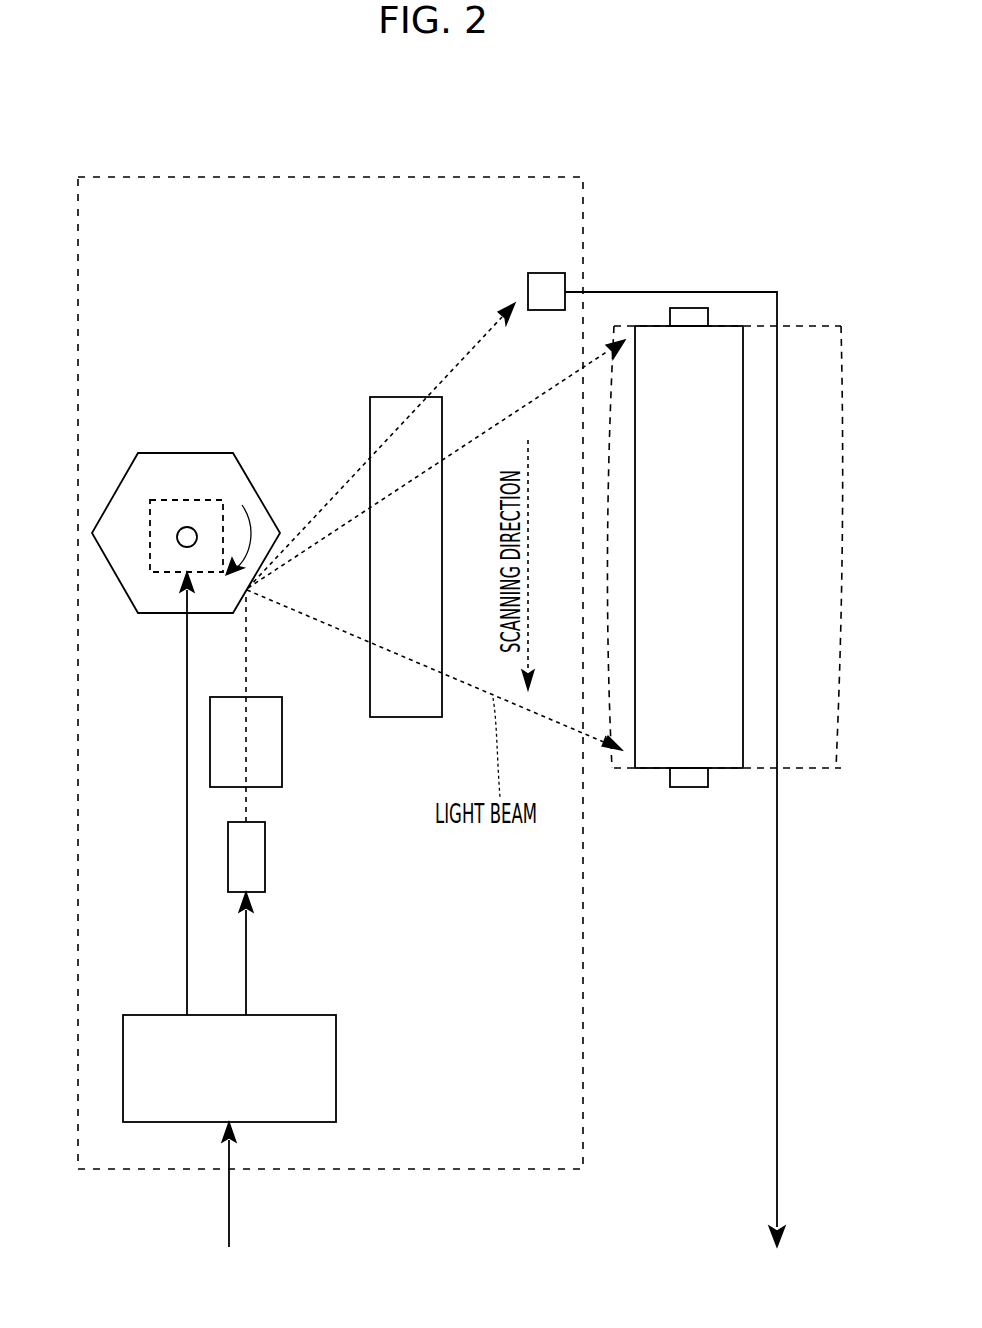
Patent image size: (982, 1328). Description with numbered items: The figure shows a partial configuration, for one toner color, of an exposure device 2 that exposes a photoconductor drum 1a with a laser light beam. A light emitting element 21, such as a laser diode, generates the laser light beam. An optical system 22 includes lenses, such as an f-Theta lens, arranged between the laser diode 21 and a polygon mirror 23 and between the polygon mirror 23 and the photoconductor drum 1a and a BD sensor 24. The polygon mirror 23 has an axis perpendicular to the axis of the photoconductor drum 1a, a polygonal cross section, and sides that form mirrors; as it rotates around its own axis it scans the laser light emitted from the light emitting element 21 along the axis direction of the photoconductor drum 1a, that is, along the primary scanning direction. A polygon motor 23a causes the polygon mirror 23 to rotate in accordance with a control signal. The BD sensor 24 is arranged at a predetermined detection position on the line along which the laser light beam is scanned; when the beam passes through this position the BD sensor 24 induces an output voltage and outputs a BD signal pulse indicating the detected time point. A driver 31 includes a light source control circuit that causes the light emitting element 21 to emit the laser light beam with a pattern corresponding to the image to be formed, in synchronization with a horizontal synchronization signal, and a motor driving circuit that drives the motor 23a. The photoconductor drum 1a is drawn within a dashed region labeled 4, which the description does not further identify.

The exposure device 2 is at (583, 220).
The BD sensor 24 is at (543, 273).
The optical system 22 is at (403, 397).
The polygon mirror 23 is at (232, 472).
The polygon motor 23a is at (178, 500).
The light emitting element 21 is at (265, 840).
The driver 31 is at (336, 1030).
The image forming unit 4 is at (790, 325).
The photoconductor drum 1a is at (662, 769).